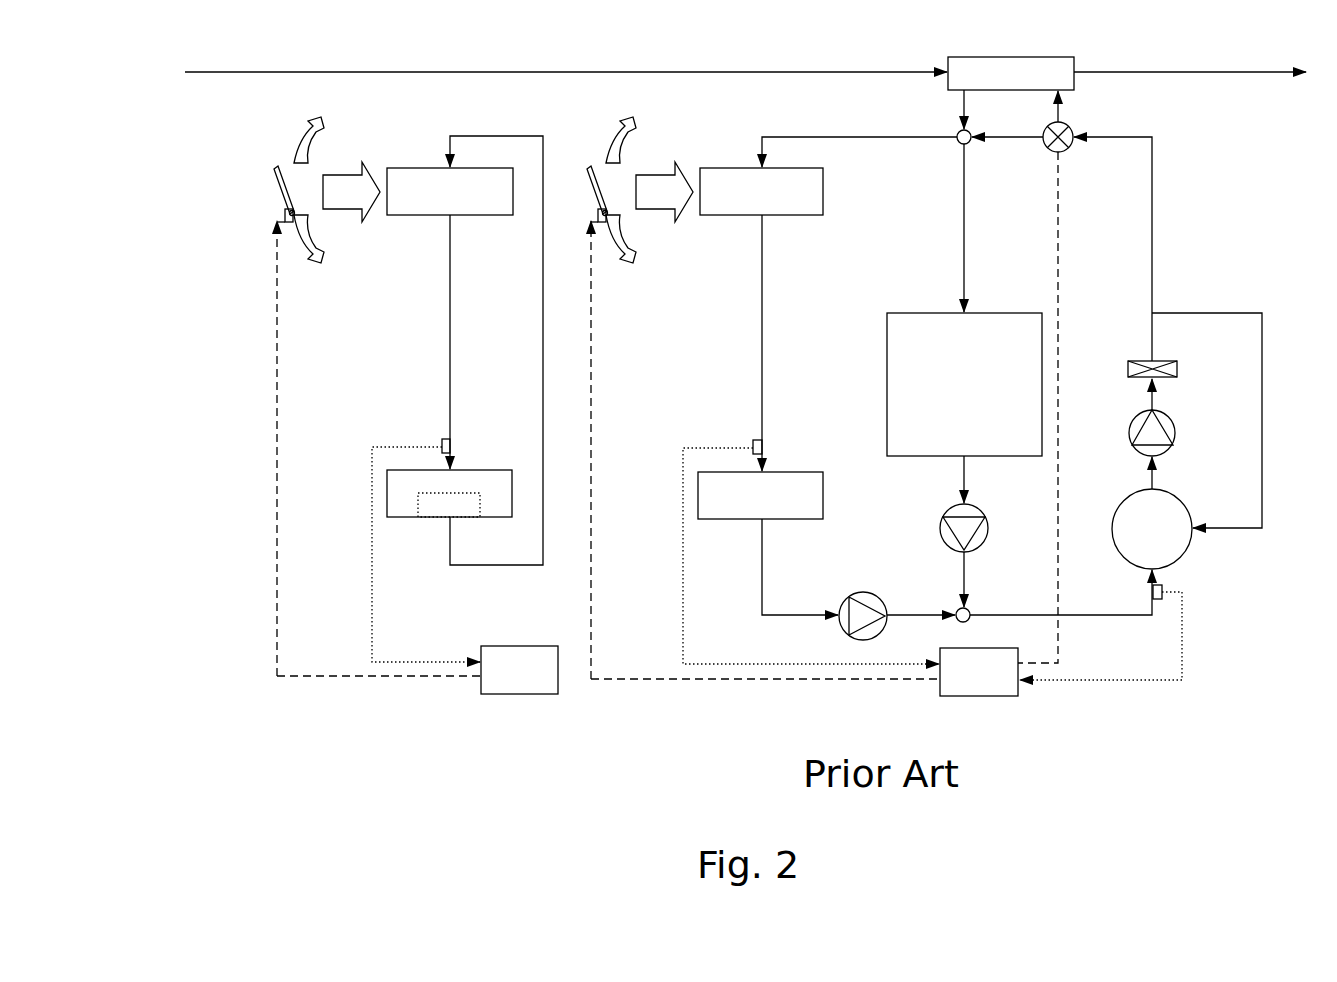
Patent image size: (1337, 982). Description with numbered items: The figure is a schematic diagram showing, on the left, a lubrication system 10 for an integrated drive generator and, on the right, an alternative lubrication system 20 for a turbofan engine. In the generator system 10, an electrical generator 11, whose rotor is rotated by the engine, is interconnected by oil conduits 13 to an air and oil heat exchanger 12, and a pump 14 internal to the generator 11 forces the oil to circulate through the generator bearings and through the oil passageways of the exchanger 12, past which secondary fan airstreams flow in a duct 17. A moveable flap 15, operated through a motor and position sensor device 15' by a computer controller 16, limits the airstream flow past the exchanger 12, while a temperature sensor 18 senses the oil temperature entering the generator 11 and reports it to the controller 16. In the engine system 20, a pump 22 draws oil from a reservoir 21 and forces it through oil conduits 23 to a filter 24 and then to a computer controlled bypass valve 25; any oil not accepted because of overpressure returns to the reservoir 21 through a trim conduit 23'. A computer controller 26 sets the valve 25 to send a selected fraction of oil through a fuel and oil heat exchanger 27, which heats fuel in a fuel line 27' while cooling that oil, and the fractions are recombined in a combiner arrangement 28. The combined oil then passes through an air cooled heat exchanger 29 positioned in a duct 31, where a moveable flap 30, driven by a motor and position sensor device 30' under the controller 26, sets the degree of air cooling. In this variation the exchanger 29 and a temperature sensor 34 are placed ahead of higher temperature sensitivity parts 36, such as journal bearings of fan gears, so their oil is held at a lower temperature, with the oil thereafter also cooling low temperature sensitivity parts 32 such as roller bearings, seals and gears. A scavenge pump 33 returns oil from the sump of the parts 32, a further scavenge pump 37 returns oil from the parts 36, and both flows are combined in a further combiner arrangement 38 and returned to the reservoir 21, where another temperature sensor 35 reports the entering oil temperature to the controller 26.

The lubrication system for integrated drive generator system 10 is at (371, 734).
The electrical generator 11 is at (480, 470).
The air and oil heat exchanger 12 is at (482, 217).
The oil conduits 13 is at (450, 301).
The pump 14 is at (432, 517).
The moveable flap 15 is at (295, 192).
The motor and associated position sensor device 15' is at (347, 438).
The computer controller 16 is at (536, 647).
The duct 17 is at (315, 140).
The temperature sensor 18 is at (442, 444).
The lubrication system for turbofan engine 20 is at (1122, 742).
The oil reservoir 21 is at (1185, 556).
The pump 22 is at (1171, 450).
The oil conduits 23 is at (996, 352).
The trim conduit 23' is at (1209, 404).
The filter 24 is at (1172, 362).
The bypass valve 25 is at (1068, 127).
The computer controller 26 is at (995, 648).
The fuel and oil heat exchanger 27 is at (975, 78).
The fuel line 27' is at (1034, 58).
The combiner arrangement 28 is at (957, 132).
The air cooled heat exchanger 29 is at (823, 181).
The moveable flap 30 is at (617, 192).
The motor and associated position sensor device 30' is at (739, 443).
The duct 31 is at (626, 137).
The low temperature sensitivity parts 32 is at (887, 410).
The scavenge pump 33 is at (988, 522).
The temperature sensor 34 is at (753, 447).
The temperature sensor 35 is at (1163, 602).
The higher temperature sensitivity parts 36 is at (800, 472).
The further scavenge pump 37 is at (858, 593).
The further combiner arrangement 38 is at (975, 612).